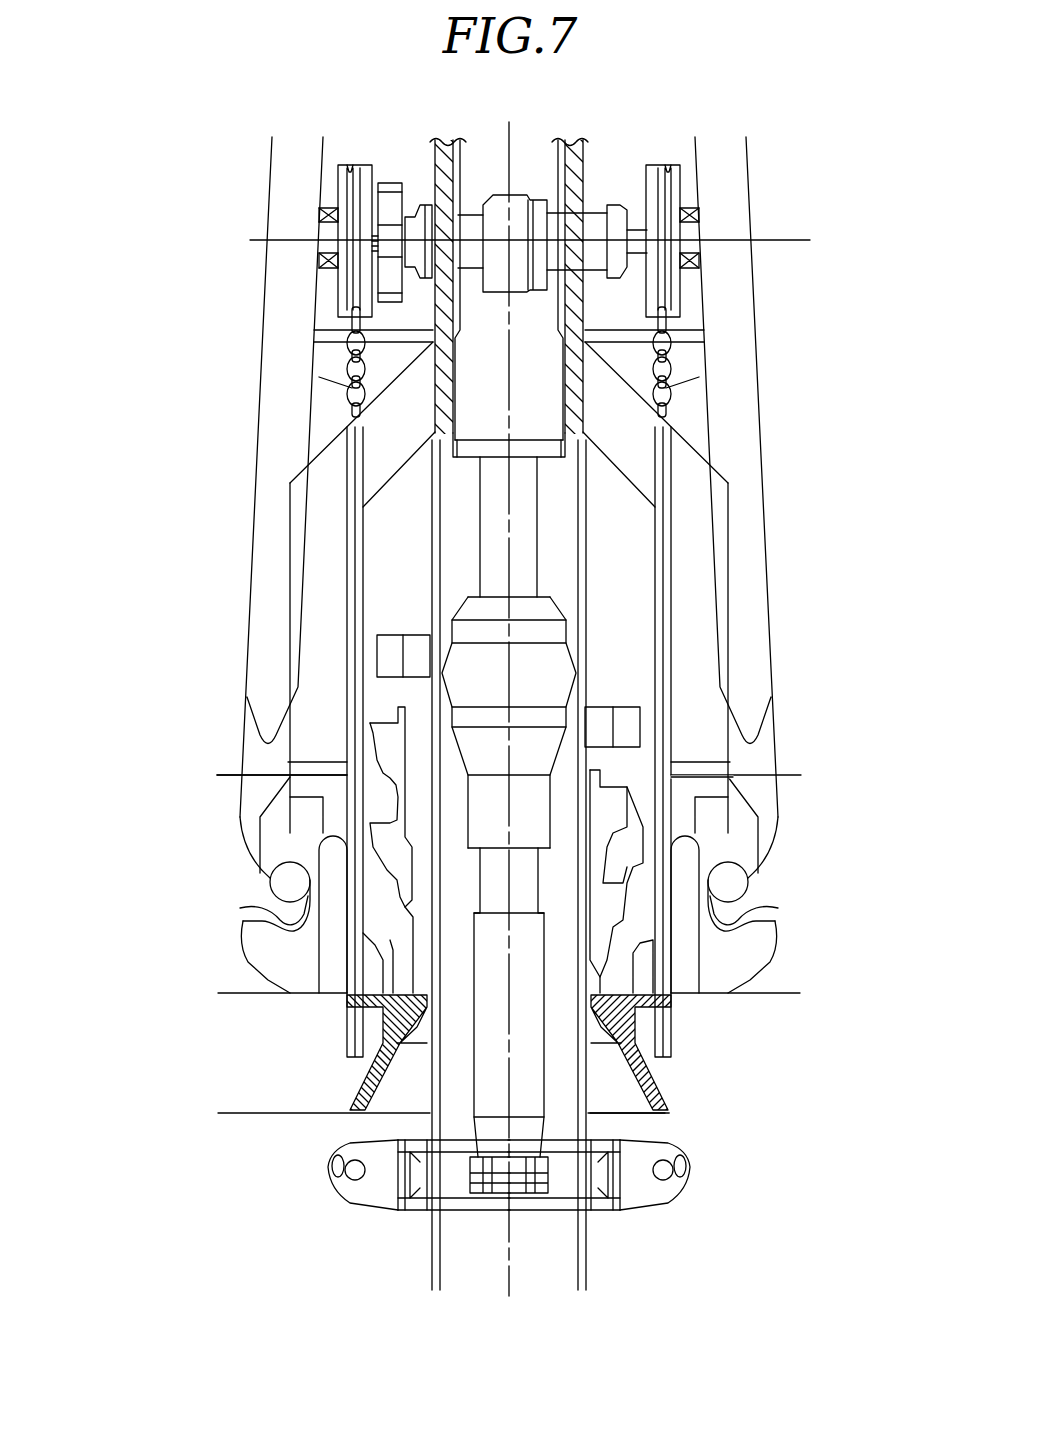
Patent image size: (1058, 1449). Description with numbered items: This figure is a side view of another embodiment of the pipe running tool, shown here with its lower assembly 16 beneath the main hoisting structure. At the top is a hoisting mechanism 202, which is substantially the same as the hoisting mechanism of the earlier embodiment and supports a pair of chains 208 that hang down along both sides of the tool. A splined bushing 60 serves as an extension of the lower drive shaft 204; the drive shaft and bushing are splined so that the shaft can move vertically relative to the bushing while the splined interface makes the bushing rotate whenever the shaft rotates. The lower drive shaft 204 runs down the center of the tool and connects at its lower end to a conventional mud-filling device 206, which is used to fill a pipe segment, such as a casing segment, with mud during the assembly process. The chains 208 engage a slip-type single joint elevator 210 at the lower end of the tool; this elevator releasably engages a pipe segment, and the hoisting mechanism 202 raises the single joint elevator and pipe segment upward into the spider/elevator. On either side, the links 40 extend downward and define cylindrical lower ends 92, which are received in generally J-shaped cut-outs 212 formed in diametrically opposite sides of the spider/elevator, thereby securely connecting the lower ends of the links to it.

The base plate assembly 16 is at (310, 1034).
The links 40 is at (254, 582).
The splined bushing 60 is at (433, 160).
The cylindrical members 92 is at (281, 882).
The hoisting mechanism 202 is at (748, 231).
The lower drive shaft 204 is at (568, 533).
The mud-filling device 206 is at (548, 670).
The chains 208 is at (323, 353).
The slip-type single joint elevator 210 is at (712, 1140).
The J-shaped cut-outs 212 is at (240, 908).